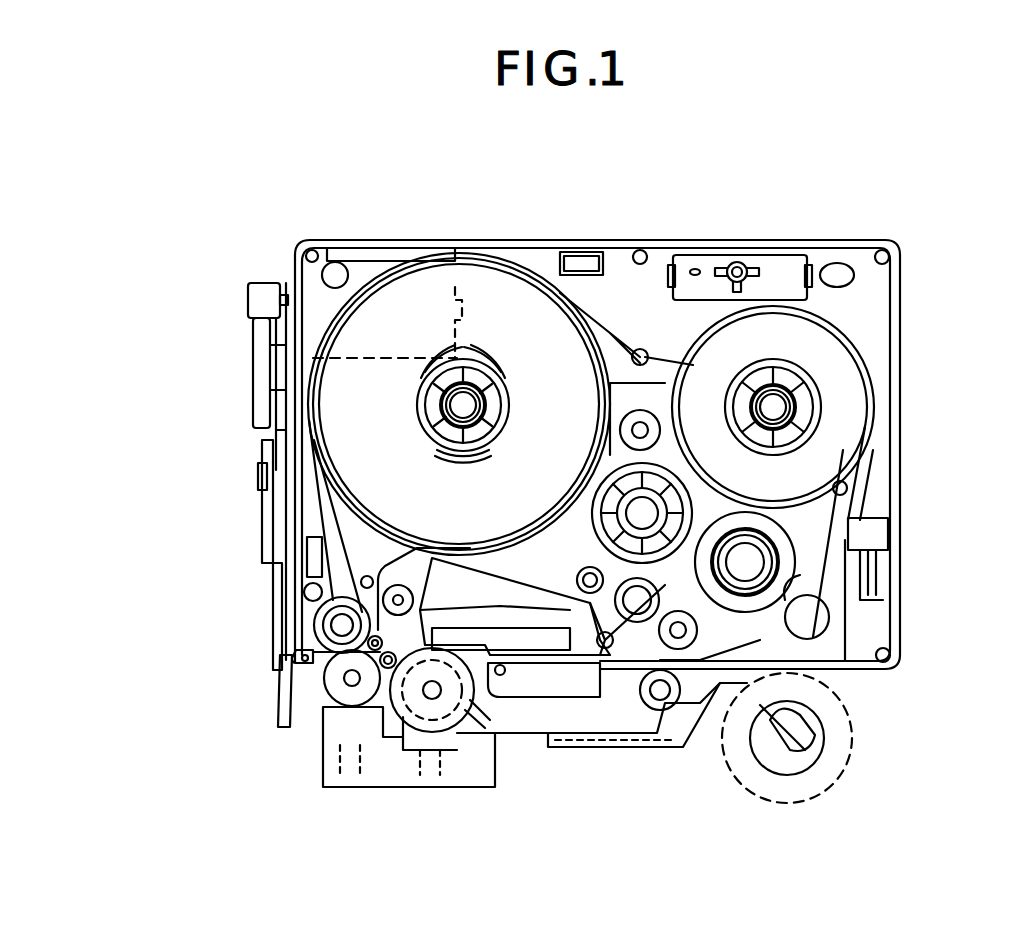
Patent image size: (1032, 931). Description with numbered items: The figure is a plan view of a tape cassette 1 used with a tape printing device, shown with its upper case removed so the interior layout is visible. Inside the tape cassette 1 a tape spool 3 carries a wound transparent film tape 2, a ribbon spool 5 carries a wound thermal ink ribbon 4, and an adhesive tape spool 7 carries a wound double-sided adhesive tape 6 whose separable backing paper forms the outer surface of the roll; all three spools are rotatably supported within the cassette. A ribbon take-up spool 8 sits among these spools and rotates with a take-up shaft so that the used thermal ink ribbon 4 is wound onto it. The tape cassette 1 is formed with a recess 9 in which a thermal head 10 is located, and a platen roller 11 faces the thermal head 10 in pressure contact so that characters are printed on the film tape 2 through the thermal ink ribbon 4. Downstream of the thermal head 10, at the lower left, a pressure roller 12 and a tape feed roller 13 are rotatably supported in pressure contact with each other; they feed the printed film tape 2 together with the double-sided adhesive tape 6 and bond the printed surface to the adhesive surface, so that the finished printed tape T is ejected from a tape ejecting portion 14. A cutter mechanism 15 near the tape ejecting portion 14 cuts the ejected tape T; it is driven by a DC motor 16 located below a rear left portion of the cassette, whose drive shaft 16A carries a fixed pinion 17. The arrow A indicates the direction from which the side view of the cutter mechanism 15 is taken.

The tape cassette 1 is at (922, 399).
The transparent film tape 2 is at (822, 348).
The tape spool 3 is at (813, 425).
The thermal ink ribbon 4 is at (790, 558).
The ribbon spool 5 is at (757, 583).
The double-sided adhesive tape 6 is at (505, 302).
The adhesive tape spool 7 is at (463, 358).
The ribbon take-up spool 8 is at (693, 507).
The recess 9 is at (585, 700).
The thermal head 10 is at (528, 640).
The platen roller 11 is at (440, 720).
The pressure roller 12 is at (330, 612).
The tape feed roller 13 is at (335, 690).
The tape ejecting portion 14 is at (296, 672).
The cutter mechanism 15 is at (230, 622).
The DC motor 16 is at (372, 273).
The drive shaft 16A is at (280, 290).
The pinion 17 is at (245, 297).
The arrow A is at (200, 481).
The printed tape T is at (276, 685).